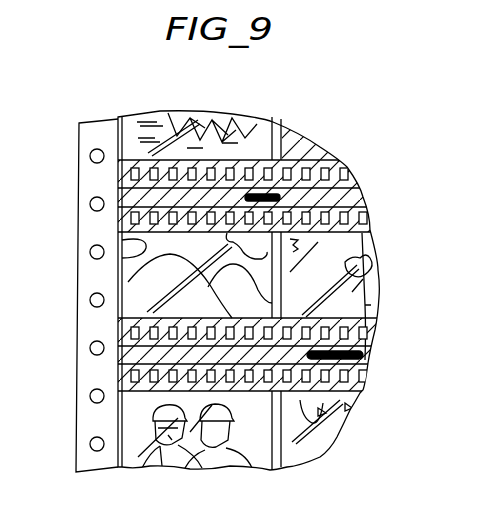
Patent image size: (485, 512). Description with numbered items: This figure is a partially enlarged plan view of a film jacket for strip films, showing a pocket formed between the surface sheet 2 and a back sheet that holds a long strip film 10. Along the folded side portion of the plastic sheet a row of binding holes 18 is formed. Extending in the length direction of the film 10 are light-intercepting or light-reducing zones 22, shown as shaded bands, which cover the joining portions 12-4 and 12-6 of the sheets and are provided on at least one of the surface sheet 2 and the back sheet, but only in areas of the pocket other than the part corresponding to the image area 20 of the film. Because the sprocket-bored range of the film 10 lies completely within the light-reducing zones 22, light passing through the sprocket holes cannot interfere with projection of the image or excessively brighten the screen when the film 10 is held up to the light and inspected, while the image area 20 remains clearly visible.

The surface sheet 2 is at (378, 305).
The film 10 is at (378, 283).
The joining portion 12-4 is at (276, 177).
The joining portion 12-6 is at (368, 355).
The binding hole 18 is at (91, 439).
The image area 20 is at (150, 117).
The light-reducing zone 22 is at (118, 194).